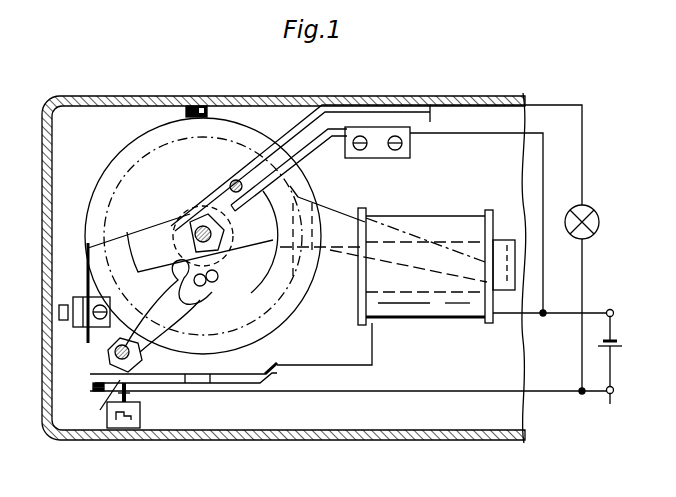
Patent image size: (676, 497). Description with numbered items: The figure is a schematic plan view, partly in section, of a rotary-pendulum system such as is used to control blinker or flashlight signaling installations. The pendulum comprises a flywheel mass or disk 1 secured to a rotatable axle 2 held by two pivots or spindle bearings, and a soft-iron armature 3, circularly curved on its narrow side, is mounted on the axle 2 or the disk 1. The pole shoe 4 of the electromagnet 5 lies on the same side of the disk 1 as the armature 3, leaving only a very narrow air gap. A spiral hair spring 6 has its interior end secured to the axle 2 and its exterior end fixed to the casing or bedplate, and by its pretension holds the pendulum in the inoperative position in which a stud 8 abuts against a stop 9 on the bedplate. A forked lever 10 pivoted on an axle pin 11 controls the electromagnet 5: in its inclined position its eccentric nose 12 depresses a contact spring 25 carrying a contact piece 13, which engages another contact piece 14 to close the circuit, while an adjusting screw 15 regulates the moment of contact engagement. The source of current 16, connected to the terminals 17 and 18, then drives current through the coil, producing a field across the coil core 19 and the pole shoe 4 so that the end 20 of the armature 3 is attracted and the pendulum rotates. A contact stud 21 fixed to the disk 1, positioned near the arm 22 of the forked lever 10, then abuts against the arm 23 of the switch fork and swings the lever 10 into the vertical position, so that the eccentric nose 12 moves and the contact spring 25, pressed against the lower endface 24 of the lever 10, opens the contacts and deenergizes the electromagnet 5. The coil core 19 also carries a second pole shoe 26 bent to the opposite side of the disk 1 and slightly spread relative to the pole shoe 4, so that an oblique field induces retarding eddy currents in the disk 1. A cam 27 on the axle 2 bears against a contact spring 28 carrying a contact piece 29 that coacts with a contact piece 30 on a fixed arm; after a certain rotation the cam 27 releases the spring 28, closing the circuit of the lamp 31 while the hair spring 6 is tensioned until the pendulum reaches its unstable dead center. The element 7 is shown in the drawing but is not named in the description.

The flywheel mass or disk 1 is at (108, 180).
The rotatable axle 2 is at (213, 246).
The soft-iron armature 3 is at (86, 248).
The pole shoe 4 is at (288, 272).
The electromagnet 5 is at (428, 228).
The spiral hair spring 6 is at (88, 280).
The terminal 7 is at (64, 322).
The stud 8 is at (207, 106).
The stop 9 is at (189, 101).
The forked lever 10 is at (157, 304).
The axle pin 11 is at (115, 354).
The eccentric nose 12 is at (143, 372).
The contact piece 13 is at (93, 384).
The contact piece 14 is at (95, 391).
The adjusting screw 15 is at (130, 420).
The source of current 16 is at (618, 343).
The terminal 17 is at (611, 309).
The terminal 18 is at (610, 404).
The coil core 19 is at (505, 243).
The end of armature 20 is at (308, 198).
The contact stud 21 is at (201, 287).
The arm of forked lever 22 is at (213, 283).
The arm of switch fork 23 is at (140, 268).
The lower endface of lever 24 is at (100, 410).
The contact spring 25 is at (183, 380).
The pole shoe 26 is at (342, 218).
The cam 27 is at (193, 217).
The contact spring 28 is at (173, 218).
The contact piece 29 is at (233, 180).
The contact piece 30 is at (296, 178).
The lamp 31 is at (594, 209).